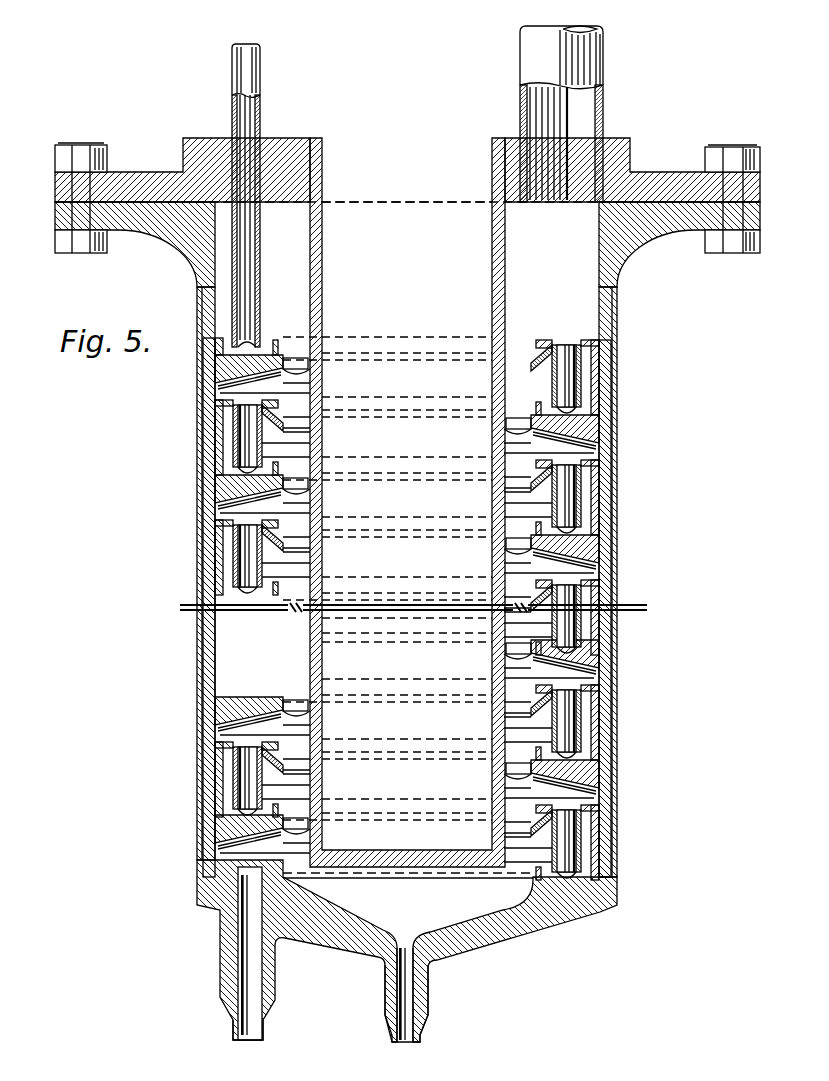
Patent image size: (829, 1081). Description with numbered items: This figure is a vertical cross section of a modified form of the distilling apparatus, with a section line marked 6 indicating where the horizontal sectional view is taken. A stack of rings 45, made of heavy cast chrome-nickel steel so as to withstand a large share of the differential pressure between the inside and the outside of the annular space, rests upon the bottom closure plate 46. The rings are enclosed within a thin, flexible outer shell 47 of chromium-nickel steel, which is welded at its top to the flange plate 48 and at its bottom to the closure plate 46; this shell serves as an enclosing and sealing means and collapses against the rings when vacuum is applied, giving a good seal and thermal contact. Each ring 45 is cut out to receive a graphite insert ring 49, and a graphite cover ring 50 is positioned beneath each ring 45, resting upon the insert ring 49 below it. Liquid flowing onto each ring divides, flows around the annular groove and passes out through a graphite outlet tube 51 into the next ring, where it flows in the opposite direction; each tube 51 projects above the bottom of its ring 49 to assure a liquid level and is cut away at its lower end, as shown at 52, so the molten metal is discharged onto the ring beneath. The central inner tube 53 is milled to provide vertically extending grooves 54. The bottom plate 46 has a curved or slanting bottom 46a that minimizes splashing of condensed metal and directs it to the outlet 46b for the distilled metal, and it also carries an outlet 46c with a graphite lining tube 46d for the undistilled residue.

The rings 45 is at (215, 650).
The bottom closure plate 46 is at (387, 968).
The curved or slanting bottom 46a is at (460, 938).
The outlet 46b is at (430, 1032).
The outlet 46c is at (254, 1042).
The graphite lining tube 46d is at (238, 966).
The outer shell 47 is at (217, 456).
The flange plate 48 is at (133, 222).
The graphite insert ring 49 is at (207, 713).
The graphite cover ring 50 is at (285, 381).
The outlet tube 51 is at (236, 553).
The cut away bottom end 52 is at (212, 490).
The inner tube 53 is at (500, 556).
The grooves 54 is at (515, 662).
The section line 6- 6 is at (195, 400).